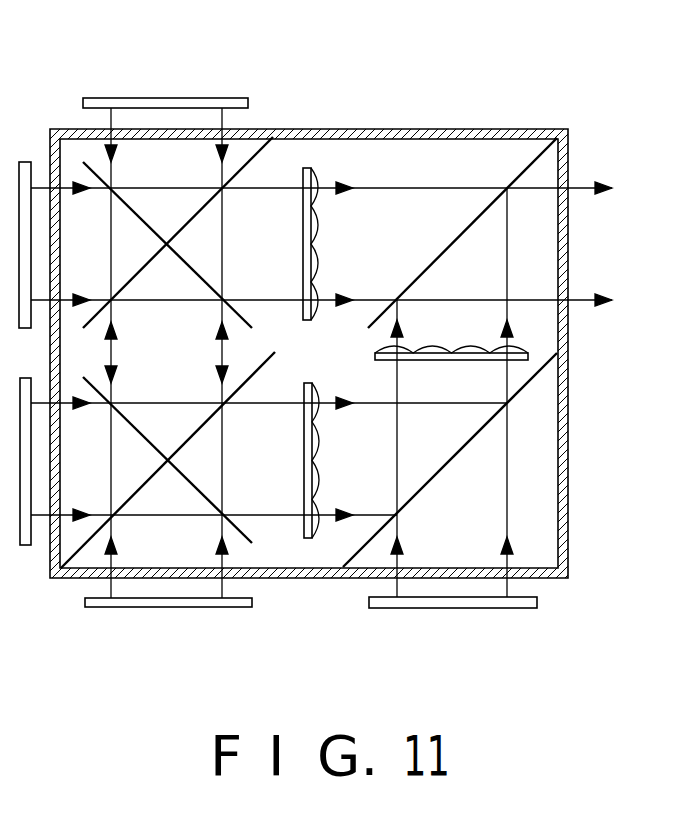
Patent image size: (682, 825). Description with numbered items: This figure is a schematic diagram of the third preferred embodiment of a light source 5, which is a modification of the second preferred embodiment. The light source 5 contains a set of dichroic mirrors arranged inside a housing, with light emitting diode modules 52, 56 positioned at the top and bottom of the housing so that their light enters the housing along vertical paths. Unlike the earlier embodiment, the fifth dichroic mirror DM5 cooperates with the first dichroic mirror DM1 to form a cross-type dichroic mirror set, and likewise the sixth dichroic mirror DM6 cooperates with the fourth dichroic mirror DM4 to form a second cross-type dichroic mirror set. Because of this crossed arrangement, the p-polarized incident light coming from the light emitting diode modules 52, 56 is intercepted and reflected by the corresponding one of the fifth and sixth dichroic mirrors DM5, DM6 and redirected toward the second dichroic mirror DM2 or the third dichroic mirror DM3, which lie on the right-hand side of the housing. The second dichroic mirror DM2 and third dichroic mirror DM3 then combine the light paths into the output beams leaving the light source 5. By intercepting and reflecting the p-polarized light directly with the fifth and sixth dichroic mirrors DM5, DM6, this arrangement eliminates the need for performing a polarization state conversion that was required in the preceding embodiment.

The light source 5 is at (432, 110).
The light emitting diode module 52 is at (246, 108).
The light emitting diode module 56 is at (195, 607).
The first dichroic mirror DM1 is at (197, 267).
The second dichroic mirror DM2 is at (412, 283).
The third dichroic mirror DM3 is at (430, 482).
The fourth dichroic mirror DM4 is at (142, 487).
The fifth dichroic mirror DM5 is at (203, 213).
The sixth dichroic mirror DM6 is at (152, 444).